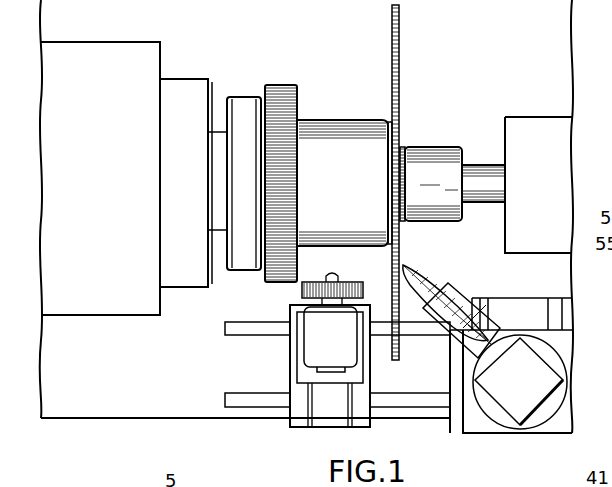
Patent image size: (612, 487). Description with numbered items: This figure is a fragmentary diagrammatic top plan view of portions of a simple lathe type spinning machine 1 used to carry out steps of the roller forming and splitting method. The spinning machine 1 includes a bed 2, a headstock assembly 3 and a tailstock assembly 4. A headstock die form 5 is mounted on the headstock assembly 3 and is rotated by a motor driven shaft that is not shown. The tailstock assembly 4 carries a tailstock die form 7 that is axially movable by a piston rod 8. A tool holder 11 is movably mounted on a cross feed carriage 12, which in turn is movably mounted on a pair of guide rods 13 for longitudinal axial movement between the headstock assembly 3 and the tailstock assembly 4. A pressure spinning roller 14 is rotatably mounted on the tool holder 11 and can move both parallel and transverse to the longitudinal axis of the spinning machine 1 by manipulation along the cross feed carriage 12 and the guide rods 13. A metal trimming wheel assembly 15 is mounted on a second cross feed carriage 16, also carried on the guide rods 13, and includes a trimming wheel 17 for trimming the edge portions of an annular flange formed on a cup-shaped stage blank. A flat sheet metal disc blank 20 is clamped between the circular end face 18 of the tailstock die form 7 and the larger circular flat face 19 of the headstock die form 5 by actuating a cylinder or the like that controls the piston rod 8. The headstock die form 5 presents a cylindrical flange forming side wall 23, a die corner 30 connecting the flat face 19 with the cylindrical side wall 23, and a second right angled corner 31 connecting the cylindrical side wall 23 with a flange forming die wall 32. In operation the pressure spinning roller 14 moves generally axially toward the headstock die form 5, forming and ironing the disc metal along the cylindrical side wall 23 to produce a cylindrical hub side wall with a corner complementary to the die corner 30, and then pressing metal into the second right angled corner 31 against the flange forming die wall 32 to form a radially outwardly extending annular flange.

The spinning machine 1 is at (75, 378).
The bed 2 is at (48, 347).
The headstock assembly 3 is at (166, 75).
The tailstock assembly 4 is at (541, 134).
The headstock die form 5 is at (329, 115).
The tailstock die form 7 is at (424, 160).
The piston rod 8 is at (478, 165).
The tool holder 11 is at (529, 390).
The cross feed carriage 12 is at (533, 310).
The guide rods 13 is at (238, 393).
The pressure spinning roller 14 is at (437, 283).
The metal trimming wheel assembly 15 is at (284, 346).
The second cross feed carriage 16 is at (295, 405).
The trimming wheel 17 is at (357, 290).
The circular end face 18 is at (404, 150).
The circular flat face 19 is at (386, 124).
The flat sheet metal disc blank 20 is at (400, 45).
The cylindrical flange forming side wall 23 is at (335, 245).
The die corner 30 is at (385, 240).
The second right angled corner 31 is at (298, 240).
The flange forming die wall 32 is at (300, 105).